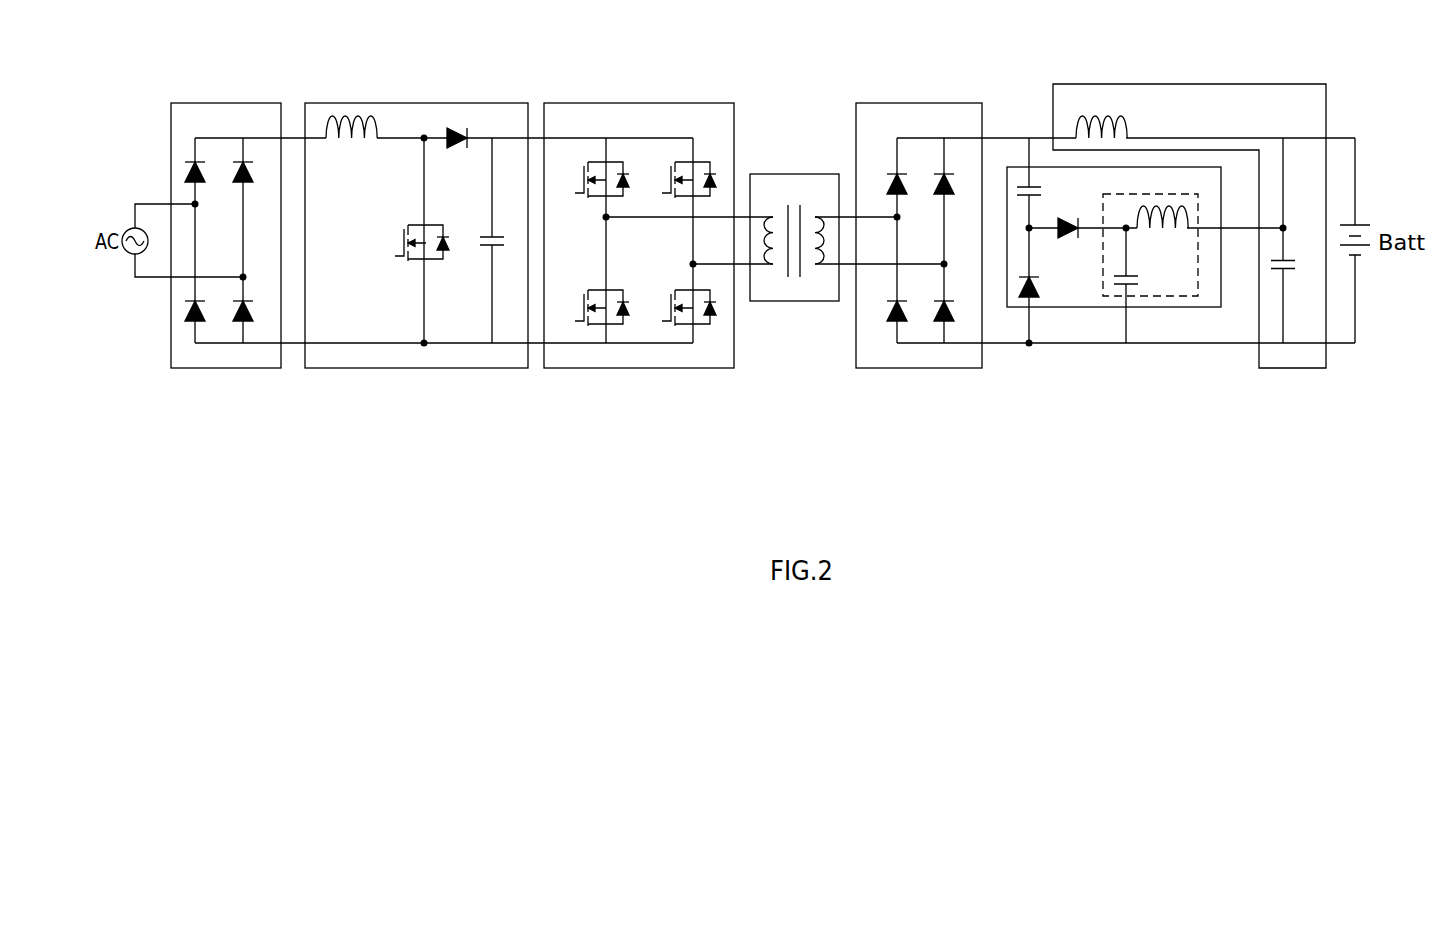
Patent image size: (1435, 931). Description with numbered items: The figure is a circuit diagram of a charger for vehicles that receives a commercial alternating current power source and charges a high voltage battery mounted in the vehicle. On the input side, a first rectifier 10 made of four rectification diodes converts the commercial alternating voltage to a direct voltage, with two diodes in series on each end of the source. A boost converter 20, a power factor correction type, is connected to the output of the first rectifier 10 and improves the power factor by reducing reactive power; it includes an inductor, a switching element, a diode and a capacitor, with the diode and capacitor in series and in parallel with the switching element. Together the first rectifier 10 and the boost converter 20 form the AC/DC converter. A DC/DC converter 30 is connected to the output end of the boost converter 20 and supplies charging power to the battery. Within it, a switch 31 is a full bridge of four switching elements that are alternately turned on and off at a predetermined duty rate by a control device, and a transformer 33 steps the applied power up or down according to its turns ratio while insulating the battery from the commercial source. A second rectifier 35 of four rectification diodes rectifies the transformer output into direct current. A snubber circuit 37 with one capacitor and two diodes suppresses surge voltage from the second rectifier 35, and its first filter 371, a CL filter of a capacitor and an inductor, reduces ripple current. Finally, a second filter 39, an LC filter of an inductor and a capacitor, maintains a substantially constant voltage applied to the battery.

The first rectifier 10 is at (223, 103).
The boost converter 20 is at (412, 103).
The DC/DC converter 30 is at (1326, 383).
The switch 31 is at (637, 103).
The transformer 33 is at (792, 174).
The second rectifier 35 is at (916, 103).
The snubber circuit 37 is at (1010, 167).
The first filter 371 is at (1129, 194).
The second filter 39 is at (1187, 84).